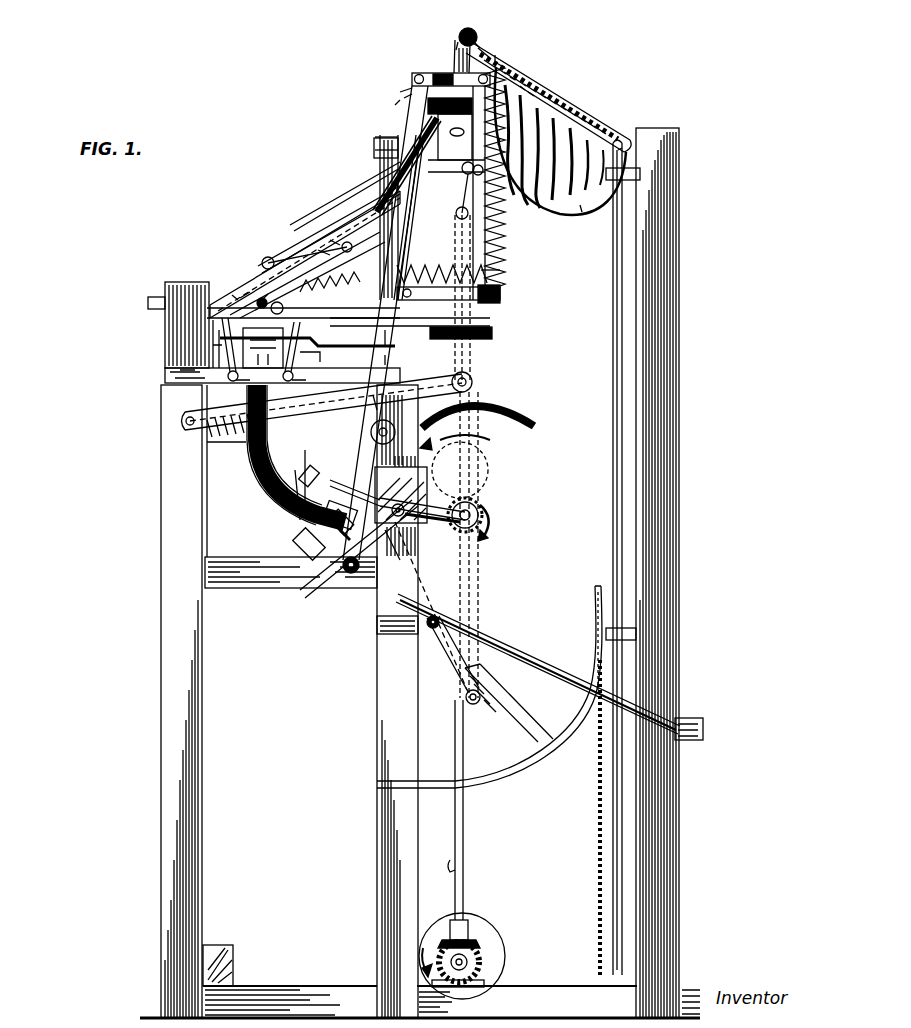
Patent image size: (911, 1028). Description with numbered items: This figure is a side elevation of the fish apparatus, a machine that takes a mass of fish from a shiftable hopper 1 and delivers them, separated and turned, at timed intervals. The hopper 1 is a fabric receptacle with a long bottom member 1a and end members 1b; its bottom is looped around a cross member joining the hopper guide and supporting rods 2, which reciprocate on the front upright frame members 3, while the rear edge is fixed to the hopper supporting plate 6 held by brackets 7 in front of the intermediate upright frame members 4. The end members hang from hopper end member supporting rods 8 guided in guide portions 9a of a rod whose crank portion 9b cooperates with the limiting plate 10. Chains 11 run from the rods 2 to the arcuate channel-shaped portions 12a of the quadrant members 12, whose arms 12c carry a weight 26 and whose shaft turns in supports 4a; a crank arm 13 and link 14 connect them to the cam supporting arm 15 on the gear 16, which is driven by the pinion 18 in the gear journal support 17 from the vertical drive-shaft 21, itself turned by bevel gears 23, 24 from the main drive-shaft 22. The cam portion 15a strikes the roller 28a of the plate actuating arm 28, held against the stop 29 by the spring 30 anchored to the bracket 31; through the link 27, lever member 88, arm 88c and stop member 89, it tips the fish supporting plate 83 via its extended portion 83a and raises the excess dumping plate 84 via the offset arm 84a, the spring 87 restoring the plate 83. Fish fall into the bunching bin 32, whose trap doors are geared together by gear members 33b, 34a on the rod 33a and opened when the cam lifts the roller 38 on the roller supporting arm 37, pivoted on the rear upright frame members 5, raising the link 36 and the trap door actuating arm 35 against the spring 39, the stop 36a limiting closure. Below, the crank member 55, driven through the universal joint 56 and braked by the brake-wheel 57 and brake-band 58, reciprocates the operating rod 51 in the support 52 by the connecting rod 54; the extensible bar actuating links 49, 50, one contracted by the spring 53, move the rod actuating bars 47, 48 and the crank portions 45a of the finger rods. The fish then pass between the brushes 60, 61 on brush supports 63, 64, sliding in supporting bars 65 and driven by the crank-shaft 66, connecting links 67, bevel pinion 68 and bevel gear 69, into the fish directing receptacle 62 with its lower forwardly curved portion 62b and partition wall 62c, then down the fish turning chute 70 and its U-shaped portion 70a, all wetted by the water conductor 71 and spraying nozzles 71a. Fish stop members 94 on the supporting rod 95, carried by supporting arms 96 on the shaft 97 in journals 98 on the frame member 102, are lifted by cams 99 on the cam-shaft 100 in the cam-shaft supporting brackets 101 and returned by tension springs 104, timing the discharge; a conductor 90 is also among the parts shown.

The shiftable hopper 1 is at (578, 118).
The bottom member 1a is at (581, 209).
The end members 1b is at (606, 128).
The hopper guide and supporting rods 2 is at (624, 360).
The front upright frame members 3 is at (680, 388).
The intermediate upright frame members 4 is at (380, 700).
The supports 4a is at (380, 626).
The rear upright frame members 5 is at (162, 700).
The hopper supporting plate 6 is at (456, 193).
The brackets 7 is at (458, 42).
The hopper end member supporting rods 8 is at (472, 48).
The guide portions 9a is at (461, 32).
The crank portion 9b is at (478, 44).
The limiting plate 10 is at (494, 58).
The chains 11 is at (598, 838).
The quadrant member 12 is at (540, 735).
The arcuate channel-shaped portions 12a is at (496, 779).
The arms 12c is at (490, 706).
The crank arm 13 is at (440, 658).
The link 14 is at (480, 578).
The cam supporting arm 15 is at (478, 432).
The cam portion 15a is at (492, 402).
The gear 16 is at (480, 470).
The gear journal support 17 is at (402, 489).
The pinion 18 is at (445, 528).
The vertical drive-shaft 21 is at (464, 840).
The main drive-shaft 22 is at (455, 987).
The bevel gear 23 is at (472, 940).
The bevel gear 24 is at (480, 956).
The weight 26 is at (335, 565).
The link 27 is at (412, 78).
The plate actuating arm 28 is at (366, 440).
The roller 28a is at (372, 428).
The stop 29 is at (360, 197).
The spring 30 is at (490, 272).
The bracket 31 is at (502, 295).
The bunching bin 32 is at (428, 120).
The rod 33a is at (498, 162).
The gear member 33b is at (500, 140).
The gear member 34a is at (374, 150).
The trap door actuating arm 35 is at (506, 196).
The link 36 is at (474, 356).
The stop 36a is at (503, 278).
The roller supporting arm 37 is at (300, 400).
The roller 38 is at (473, 380).
The spring 39 is at (506, 240).
The crank portions 45a is at (352, 237).
The rod actuating bar 47 is at (352, 282).
The rod actuating bar 48 is at (320, 262).
The extensible bar actuating link 49 is at (263, 262).
The extensible bar actuating link 50 is at (300, 270).
The operating rod 51 is at (320, 250).
The support 52 is at (330, 220).
The spring 53 is at (372, 298).
The connecting rod 54 is at (332, 240).
The crank member 55 is at (380, 160).
The universal joint 56 is at (455, 222).
The brake-wheel 57 is at (376, 136).
The brake-band 58 is at (378, 148).
The brush 60 is at (290, 360).
The brush 61 is at (232, 346).
The fish directing receptacle 62 is at (248, 475).
The lower forwardly curved portion 62b is at (300, 508).
The partition wall 62c is at (247, 446).
The brush support 63 is at (320, 357).
The brush support 64 is at (214, 356).
The supporting bars 65 is at (168, 308).
The crank-shaft 66 is at (397, 340).
The connecting links 67 is at (222, 338).
The bevel pinion 68 is at (397, 361).
The bevel gear 69 is at (494, 332).
The fish turning chute 70 is at (495, 648).
The U-shaped portion 70a is at (690, 718).
The water conductor 71 is at (243, 298).
The spraying nozzles 71a is at (238, 298).
The fish supporting plate 83 is at (412, 93).
The extended portion 83a is at (398, 101).
The excess dumping plate 84 is at (540, 100).
The offset arm 84a is at (532, 95).
The spring 87 is at (410, 88).
The lever member 88 is at (522, 88).
The arm 88c is at (512, 78).
The stop member 89 is at (433, 77).
The conductor 90 is at (471, 28).
The fish stop members 94 is at (296, 500).
The supporting rod 95 is at (304, 470).
The supporting arms 96 is at (314, 478).
The shaft 97 is at (421, 494).
The journal 98 is at (408, 498).
The cams 99 is at (482, 520).
The cam-shaft 100 is at (480, 510).
The cam-shaft supporting bracket 101 is at (428, 552).
The frame member 102 is at (400, 553).
The tension springs 104 is at (322, 553).